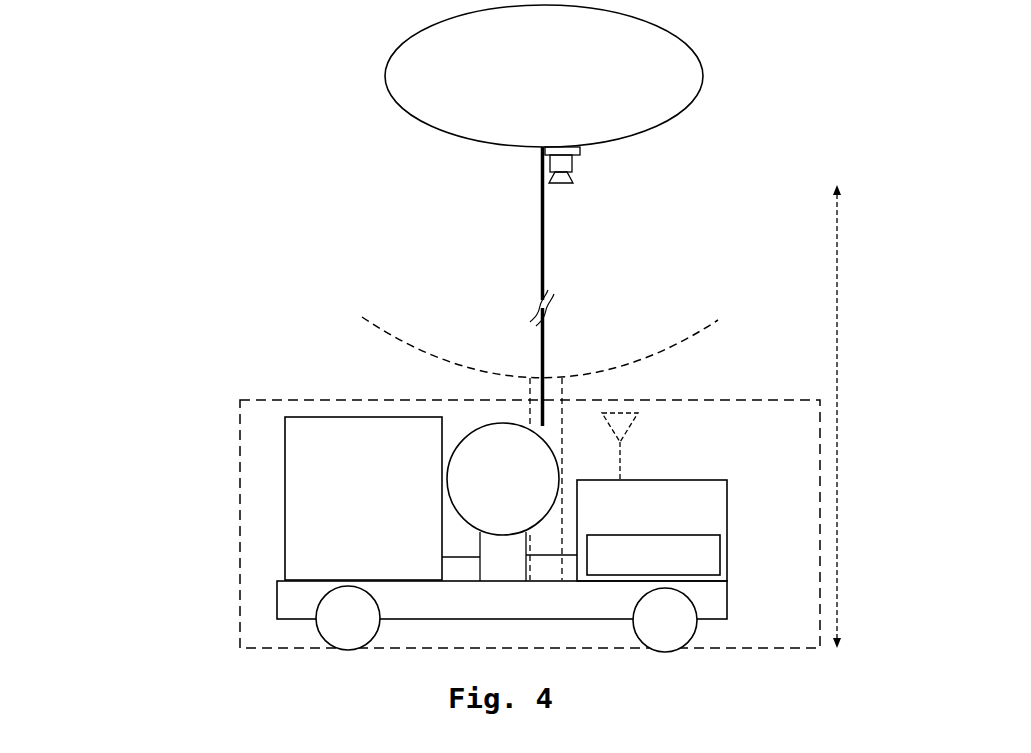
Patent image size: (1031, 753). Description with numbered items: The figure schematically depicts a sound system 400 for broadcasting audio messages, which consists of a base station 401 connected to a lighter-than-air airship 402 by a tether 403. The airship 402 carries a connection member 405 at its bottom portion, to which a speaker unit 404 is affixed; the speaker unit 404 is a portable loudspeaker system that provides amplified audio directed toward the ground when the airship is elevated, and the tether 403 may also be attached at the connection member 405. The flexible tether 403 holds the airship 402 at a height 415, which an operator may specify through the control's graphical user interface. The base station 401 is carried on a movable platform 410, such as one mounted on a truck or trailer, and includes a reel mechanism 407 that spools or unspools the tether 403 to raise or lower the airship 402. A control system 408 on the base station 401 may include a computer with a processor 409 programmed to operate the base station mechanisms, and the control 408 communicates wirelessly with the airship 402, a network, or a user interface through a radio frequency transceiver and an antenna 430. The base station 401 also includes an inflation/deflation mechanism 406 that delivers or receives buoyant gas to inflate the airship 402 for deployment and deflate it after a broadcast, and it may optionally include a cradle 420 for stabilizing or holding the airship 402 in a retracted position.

The sound system 400 is at (140, 50).
The base station 401 is at (232, 415).
The lighter-than-air airship 402 is at (376, 66).
The tether 403 is at (553, 247).
The speaker unit 404 is at (582, 178).
The connection member 405 is at (590, 149).
The inflation/deflation mechanism 406 is at (382, 498).
The reel mechanism 407 is at (512, 479).
The control system 408 is at (656, 472).
The processor 409 is at (733, 553).
The movable platform 410 is at (269, 601).
The height 415 is at (950, 381).
The cradle 420 is at (348, 311).
The antenna 430 is at (646, 413).